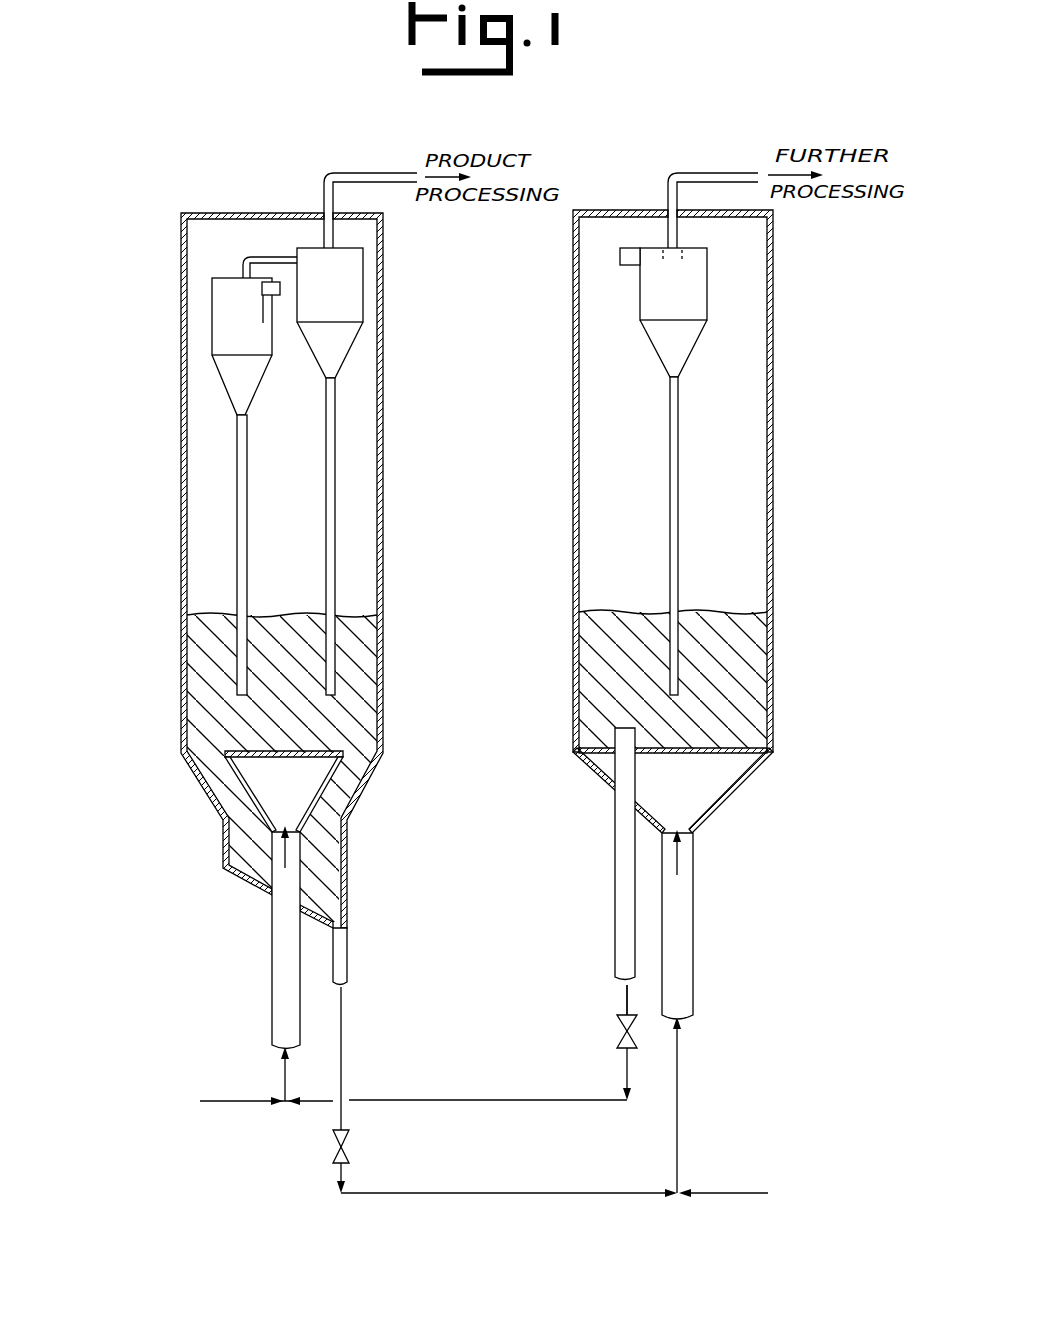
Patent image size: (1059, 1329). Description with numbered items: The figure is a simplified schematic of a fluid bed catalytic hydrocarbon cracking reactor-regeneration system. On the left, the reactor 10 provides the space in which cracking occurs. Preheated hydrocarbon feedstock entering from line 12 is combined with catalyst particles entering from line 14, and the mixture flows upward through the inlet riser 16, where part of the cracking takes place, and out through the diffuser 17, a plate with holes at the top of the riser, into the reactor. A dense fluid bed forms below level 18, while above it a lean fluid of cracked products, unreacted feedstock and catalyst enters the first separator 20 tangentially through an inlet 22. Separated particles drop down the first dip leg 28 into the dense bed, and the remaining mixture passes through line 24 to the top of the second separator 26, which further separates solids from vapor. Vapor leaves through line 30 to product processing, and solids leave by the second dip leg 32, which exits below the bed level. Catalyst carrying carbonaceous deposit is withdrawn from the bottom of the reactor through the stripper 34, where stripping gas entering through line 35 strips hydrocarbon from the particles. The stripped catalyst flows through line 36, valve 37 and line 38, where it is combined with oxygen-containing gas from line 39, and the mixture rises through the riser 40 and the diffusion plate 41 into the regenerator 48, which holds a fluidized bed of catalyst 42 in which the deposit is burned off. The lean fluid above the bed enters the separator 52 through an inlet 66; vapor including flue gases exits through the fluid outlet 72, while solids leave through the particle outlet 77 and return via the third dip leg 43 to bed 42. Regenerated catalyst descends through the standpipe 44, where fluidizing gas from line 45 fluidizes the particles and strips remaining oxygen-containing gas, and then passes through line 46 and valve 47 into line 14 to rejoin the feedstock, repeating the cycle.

The reactor 10 is at (172, 459).
The line 12 is at (225, 1101).
The line 14 is at (462, 1100).
The inlet riser 16 is at (275, 944).
The diffuser 17 is at (262, 758).
The level 18 is at (285, 613).
The first separator 20 is at (253, 403).
The inlet 22 is at (277, 281).
The line 24 is at (243, 256).
The second separator 26 is at (362, 288).
The first dip leg 28 is at (248, 517).
The line 30 is at (371, 174).
The second dip leg 32 is at (326, 452).
The stripper 34 is at (350, 898).
The line 35 is at (357, 850).
The line 36 is at (344, 1037).
The valve 37 is at (333, 1139).
The line 38 is at (537, 1166).
The line 39 is at (723, 1192).
The riser 40 is at (694, 936).
The diffusion plate 41 is at (735, 755).
The fluidized bed of catalyst 42 is at (617, 612).
The third dip leg 43 is at (680, 460).
The standpipe 44 is at (620, 843).
The line 45 is at (604, 945).
The line 46 is at (625, 999).
The valve 47 is at (618, 1039).
The regenerator 48 is at (562, 491).
The separator 52 is at (640, 322).
The inlet 66 is at (609, 257).
The fluid outlet 72 is at (690, 234).
The particle outlet 77 is at (690, 378).